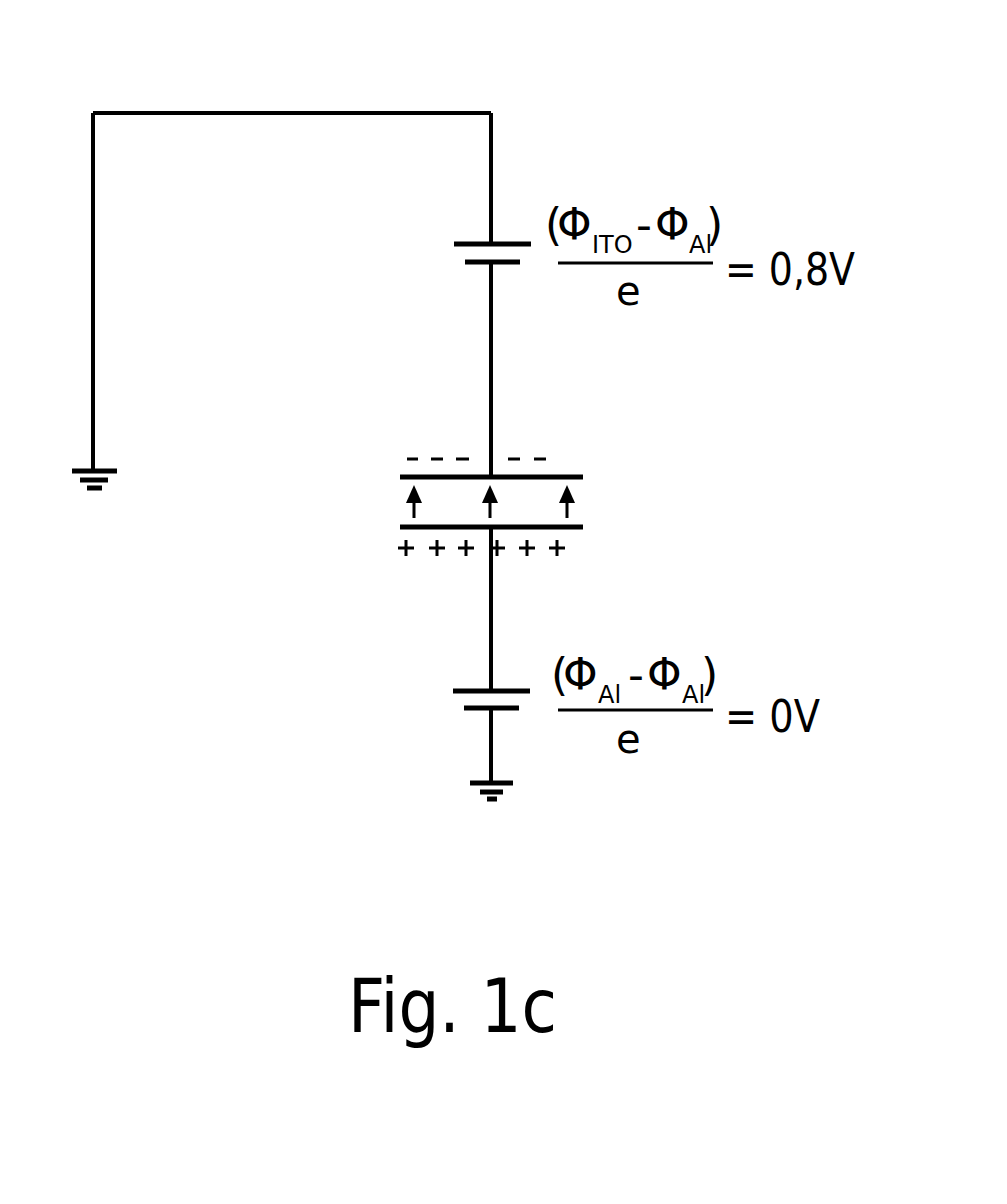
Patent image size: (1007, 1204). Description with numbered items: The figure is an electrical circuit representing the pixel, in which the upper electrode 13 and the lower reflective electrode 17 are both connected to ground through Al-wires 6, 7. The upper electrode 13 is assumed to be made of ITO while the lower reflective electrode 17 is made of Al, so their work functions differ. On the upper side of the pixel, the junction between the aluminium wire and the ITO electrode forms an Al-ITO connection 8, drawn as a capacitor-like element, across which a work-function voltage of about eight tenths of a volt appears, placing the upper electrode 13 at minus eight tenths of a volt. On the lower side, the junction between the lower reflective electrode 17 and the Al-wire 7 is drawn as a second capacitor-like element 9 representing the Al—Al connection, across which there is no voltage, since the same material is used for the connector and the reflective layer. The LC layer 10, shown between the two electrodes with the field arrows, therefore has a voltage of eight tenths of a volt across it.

The Al-wire 6 is at (318, 112).
The Al-wire 7 is at (490, 757).
The Al-ITO connection 8 is at (491, 241).
The Al/Al contact potential capacitor 9 is at (455, 703).
The LC layer 10 is at (506, 485).
The upper electrode 13 is at (567, 477).
The lower reflective electrode 17 is at (578, 527).